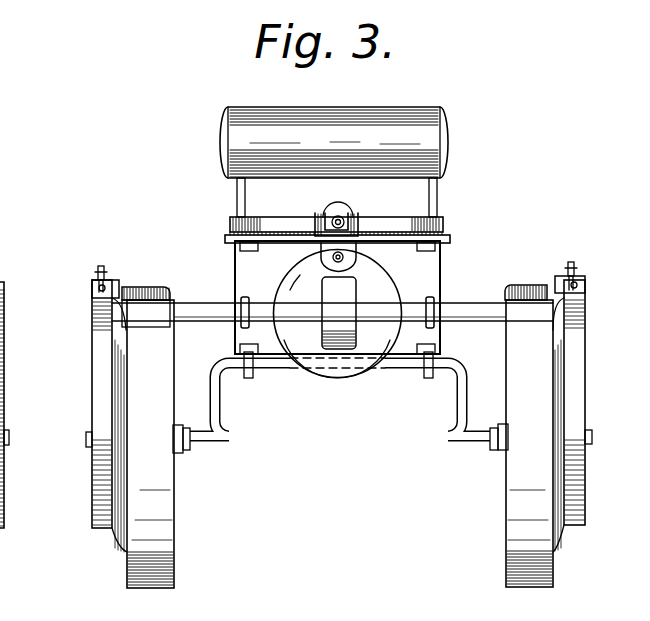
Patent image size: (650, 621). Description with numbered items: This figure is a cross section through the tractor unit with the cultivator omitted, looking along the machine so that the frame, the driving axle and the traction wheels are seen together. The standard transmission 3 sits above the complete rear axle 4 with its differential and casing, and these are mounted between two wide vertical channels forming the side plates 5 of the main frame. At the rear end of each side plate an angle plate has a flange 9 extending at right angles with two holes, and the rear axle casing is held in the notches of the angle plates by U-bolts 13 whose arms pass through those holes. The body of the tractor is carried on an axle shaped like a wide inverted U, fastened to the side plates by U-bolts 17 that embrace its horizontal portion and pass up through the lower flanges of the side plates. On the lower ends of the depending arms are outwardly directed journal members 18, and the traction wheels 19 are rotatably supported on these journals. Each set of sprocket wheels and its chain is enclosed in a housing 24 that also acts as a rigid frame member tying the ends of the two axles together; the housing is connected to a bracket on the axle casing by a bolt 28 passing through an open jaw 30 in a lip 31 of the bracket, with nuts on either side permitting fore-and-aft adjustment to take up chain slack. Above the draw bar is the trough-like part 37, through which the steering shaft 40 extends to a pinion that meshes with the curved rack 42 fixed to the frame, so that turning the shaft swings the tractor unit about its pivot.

The standard transmission 3 is at (372, 277).
The rear axle 4 is at (180, 305).
The side plates 5 is at (232, 262).
The angle plate flange 9 is at (246, 308).
The U-bolts 13 is at (240, 319).
The U-bolts 17 is at (252, 378).
The journal members 18 is at (87, 443).
The traction wheels 19 is at (160, 467).
The housing 24 is at (3, 370).
The bolt 28 is at (569, 267).
The open jaw 30 is at (92, 288).
The lip 31 is at (97, 277).
The trough-like part 37 is at (316, 222).
The steering shaft 40 is at (346, 222).
The curved rack 42 is at (445, 223).